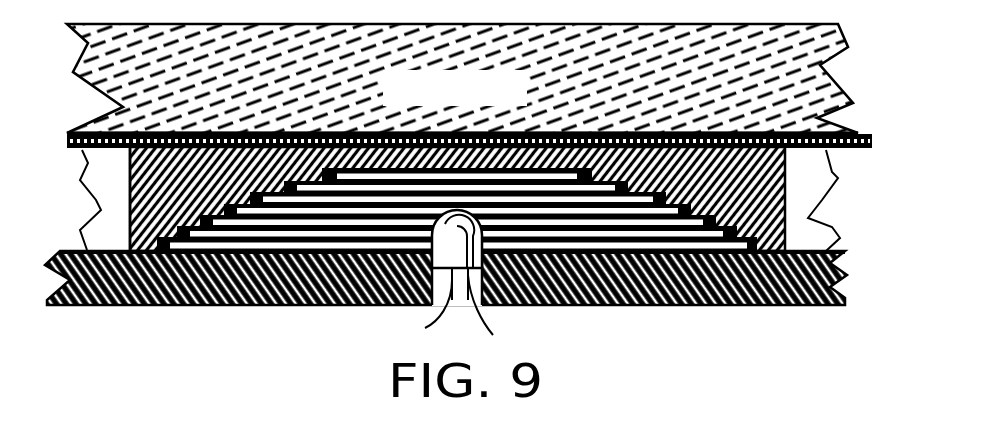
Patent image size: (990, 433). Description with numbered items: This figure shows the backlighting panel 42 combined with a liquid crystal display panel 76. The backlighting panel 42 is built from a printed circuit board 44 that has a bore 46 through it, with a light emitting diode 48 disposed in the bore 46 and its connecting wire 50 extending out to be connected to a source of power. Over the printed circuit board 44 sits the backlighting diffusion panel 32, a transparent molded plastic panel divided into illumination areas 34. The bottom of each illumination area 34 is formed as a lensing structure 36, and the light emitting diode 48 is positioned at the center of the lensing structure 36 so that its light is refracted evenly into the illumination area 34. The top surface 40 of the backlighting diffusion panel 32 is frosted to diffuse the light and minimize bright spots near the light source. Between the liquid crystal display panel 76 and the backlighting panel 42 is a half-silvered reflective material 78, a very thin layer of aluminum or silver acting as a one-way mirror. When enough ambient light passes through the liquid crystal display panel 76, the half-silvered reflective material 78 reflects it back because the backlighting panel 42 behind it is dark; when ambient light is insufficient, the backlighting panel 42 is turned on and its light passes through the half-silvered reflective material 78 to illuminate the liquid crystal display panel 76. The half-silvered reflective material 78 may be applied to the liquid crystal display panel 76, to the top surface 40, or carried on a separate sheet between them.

The backlighting diffusion panel 32 is at (127, 253).
The illumination area 34 is at (792, 192).
The lensing structure 36 is at (327, 222).
The top surface 40 is at (752, 142).
The backlighting panel 42 is at (858, 223).
The printed circuit board 44 is at (757, 306).
The bore 46 is at (457, 305).
The light emitting diode 48 is at (448, 246).
The connecting wire 50 is at (489, 317).
The liquid crystal display panel 76 is at (830, 62).
The half-silvered reflective material 78 is at (873, 145).